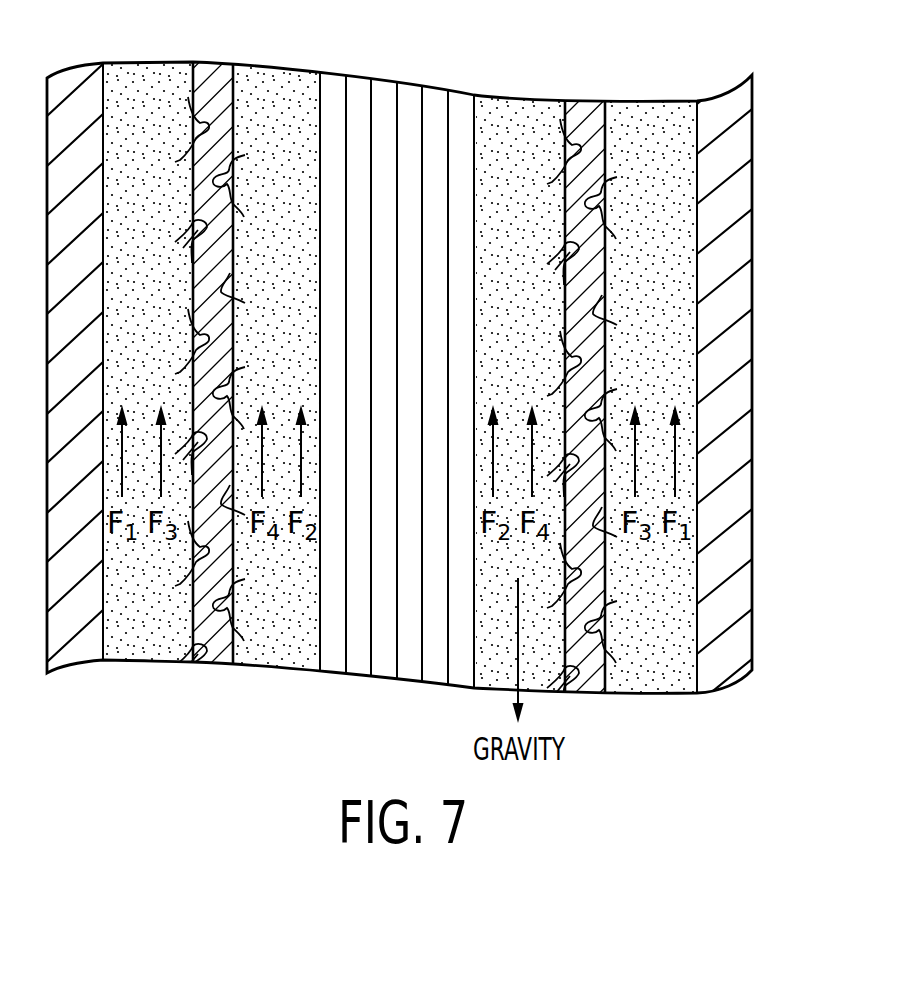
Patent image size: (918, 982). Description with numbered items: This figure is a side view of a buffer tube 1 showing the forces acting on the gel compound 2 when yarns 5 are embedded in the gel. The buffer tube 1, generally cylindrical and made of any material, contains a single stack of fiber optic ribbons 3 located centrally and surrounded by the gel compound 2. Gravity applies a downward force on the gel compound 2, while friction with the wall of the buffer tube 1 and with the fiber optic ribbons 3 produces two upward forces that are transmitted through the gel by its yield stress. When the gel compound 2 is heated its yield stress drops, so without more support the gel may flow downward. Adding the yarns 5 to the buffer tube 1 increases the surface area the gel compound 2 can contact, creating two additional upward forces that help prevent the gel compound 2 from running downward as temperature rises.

The buffer tube 1 is at (733, 237).
The gel compound 2 is at (673, 300).
The fiber optic ribbons 3 is at (410, 100).
The yarns 5 is at (215, 84).